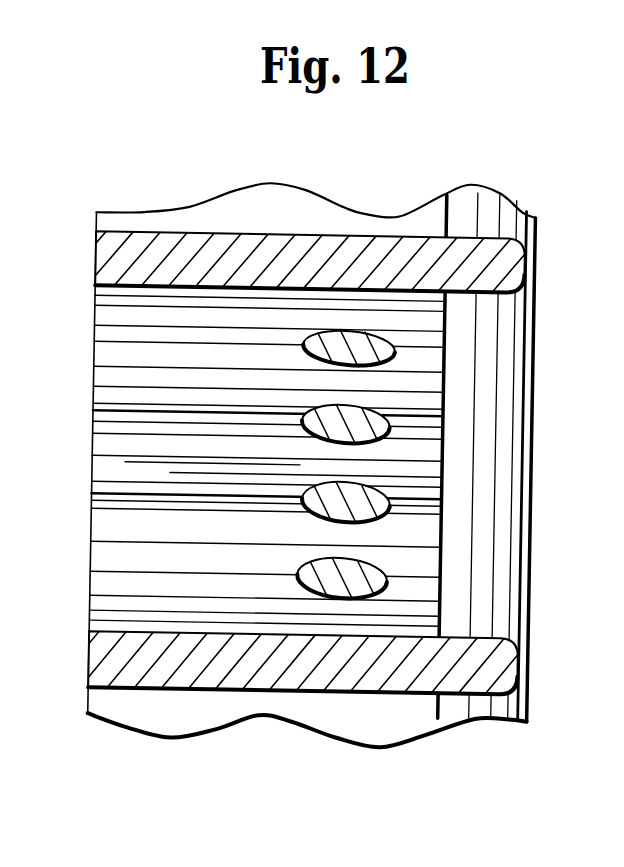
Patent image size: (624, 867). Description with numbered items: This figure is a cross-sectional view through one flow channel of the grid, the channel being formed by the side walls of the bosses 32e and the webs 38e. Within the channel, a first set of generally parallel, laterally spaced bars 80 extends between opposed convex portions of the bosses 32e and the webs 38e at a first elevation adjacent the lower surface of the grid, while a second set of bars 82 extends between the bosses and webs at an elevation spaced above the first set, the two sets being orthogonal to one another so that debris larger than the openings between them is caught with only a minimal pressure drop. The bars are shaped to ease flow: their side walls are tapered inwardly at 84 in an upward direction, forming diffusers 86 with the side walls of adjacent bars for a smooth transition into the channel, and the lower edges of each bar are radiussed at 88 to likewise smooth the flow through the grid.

The boss 32e is at (117, 538).
The web 38e is at (183, 664).
The first set of bars 80 is at (482, 603).
The second set of bars 82 is at (320, 598).
The tapered side walls 84 is at (302, 366).
The diffusers 86 is at (347, 462).
The radiussed lower edges 88 is at (388, 594).